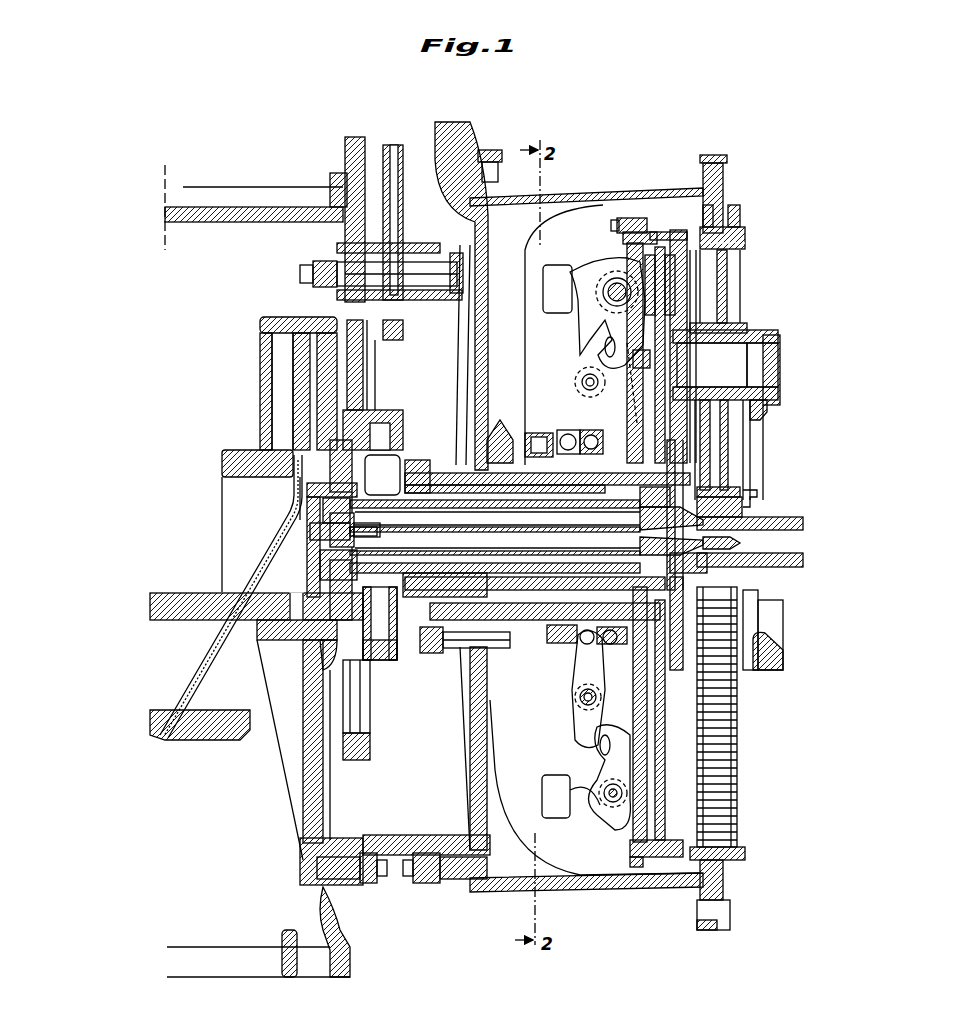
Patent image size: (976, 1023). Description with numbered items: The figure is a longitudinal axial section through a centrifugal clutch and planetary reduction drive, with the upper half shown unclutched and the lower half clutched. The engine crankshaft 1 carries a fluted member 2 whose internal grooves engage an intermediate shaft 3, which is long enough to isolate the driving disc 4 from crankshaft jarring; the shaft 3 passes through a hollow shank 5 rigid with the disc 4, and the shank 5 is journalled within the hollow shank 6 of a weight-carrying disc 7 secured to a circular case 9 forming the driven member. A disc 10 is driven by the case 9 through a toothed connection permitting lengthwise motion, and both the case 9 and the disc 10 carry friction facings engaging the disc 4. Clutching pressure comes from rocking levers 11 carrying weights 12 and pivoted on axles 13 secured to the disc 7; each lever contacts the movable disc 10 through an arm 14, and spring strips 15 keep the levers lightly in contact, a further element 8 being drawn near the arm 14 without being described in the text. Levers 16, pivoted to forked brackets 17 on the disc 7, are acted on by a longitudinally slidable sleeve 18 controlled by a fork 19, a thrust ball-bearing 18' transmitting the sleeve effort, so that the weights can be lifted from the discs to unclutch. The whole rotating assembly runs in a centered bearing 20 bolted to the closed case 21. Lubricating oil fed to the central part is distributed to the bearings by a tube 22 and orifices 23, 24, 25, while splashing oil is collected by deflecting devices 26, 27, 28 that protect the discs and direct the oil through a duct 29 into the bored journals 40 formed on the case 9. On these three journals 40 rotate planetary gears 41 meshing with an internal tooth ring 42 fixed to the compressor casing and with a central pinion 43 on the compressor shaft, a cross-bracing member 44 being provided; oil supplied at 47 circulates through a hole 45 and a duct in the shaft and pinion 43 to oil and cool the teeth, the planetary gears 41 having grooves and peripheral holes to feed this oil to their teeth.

The crankshaft 1 is at (250, 463).
The member 2 is at (366, 480).
The intermediate shaft 3 is at (440, 508).
The driving disc 4 is at (664, 455).
The hollow shank 5 is at (545, 585).
The hollow shank 6 is at (512, 440).
The weight-carrying disc 7 is at (595, 444).
The adjusting screw 8 is at (615, 227).
The circular case 9 is at (683, 232).
The disc 10 is at (683, 280).
The rocking levers 11 is at (615, 322).
The weights 12 is at (550, 277).
The axles 13 is at (605, 300).
The arm 14 is at (640, 258).
The spring strips 15 is at (625, 378).
The levers 16 is at (578, 662).
The forked brackets 17 is at (610, 645).
The sleeve 18 is at (557, 652).
The thrust ball-bearing 18' is at (570, 382).
The fork 19 is at (540, 437).
The bearing 20 is at (508, 652).
The closed case 21 is at (558, 200).
The tube 22 is at (410, 552).
The orifice 23 is at (488, 532).
The orifice 24 is at (502, 507).
The orifice 25 is at (490, 508).
The deflecting device 26 is at (660, 680).
The deflecting device 27 is at (668, 718).
The deflecting device 28 is at (678, 726).
The duct 29 is at (668, 520).
The journals 40 is at (726, 367).
The planetary gears 41 is at (723, 295).
The internal tooth ring 42 is at (720, 222).
The pinion 43 is at (745, 490).
The cross-bracing member 44 is at (762, 410).
The hole 45 is at (742, 567).
The oil supply point 47 is at (683, 573).